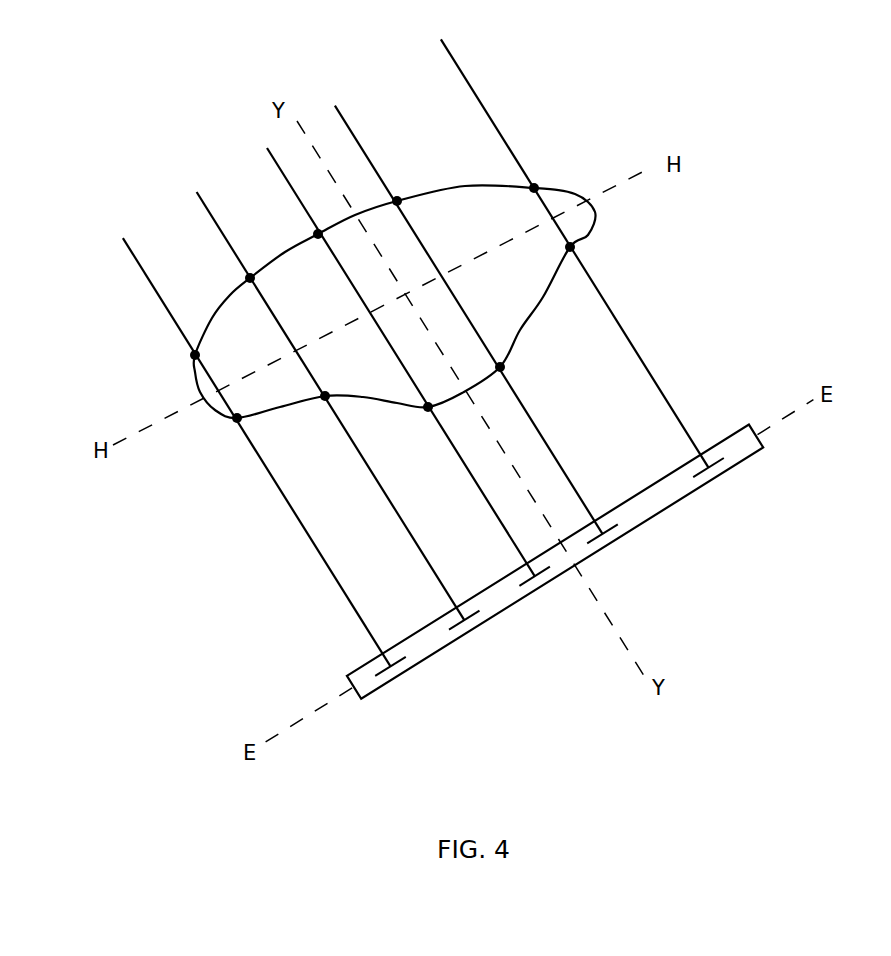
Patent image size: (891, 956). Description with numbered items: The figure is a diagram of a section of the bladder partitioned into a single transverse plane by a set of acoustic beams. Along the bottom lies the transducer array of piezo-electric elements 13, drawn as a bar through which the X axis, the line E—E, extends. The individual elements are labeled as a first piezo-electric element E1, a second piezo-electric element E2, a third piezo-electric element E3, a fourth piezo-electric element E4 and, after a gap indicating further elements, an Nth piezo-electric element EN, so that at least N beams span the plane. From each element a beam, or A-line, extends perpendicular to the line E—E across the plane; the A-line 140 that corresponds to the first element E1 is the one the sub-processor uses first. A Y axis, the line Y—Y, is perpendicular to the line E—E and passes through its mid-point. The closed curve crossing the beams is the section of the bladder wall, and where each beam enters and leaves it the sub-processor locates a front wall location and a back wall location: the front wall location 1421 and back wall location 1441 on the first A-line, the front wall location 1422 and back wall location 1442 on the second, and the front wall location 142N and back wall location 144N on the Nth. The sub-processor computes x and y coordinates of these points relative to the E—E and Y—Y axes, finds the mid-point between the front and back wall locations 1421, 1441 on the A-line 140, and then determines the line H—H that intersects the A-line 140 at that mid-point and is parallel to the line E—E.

The piezo-electric elements 13 is at (719, 455).
The A-line 140 is at (140, 268).
The back wall location 1441 is at (195, 355).
The back wall location 1442 is at (250, 278).
The back wall location 144N is at (534, 188).
The front wall location 1421 is at (237, 418).
The front wall location 1422 is at (325, 396).
The front wall location 142N is at (570, 247).
The first piezo-electric element E1 is at (390, 666).
The second piezo-electric element E2 is at (464, 620).
The third piezo-electric element E3 is at (535, 576).
The fourth piezo-electric element E4 is at (602, 534).
The Nth piezo-electric element EN is at (708, 468).